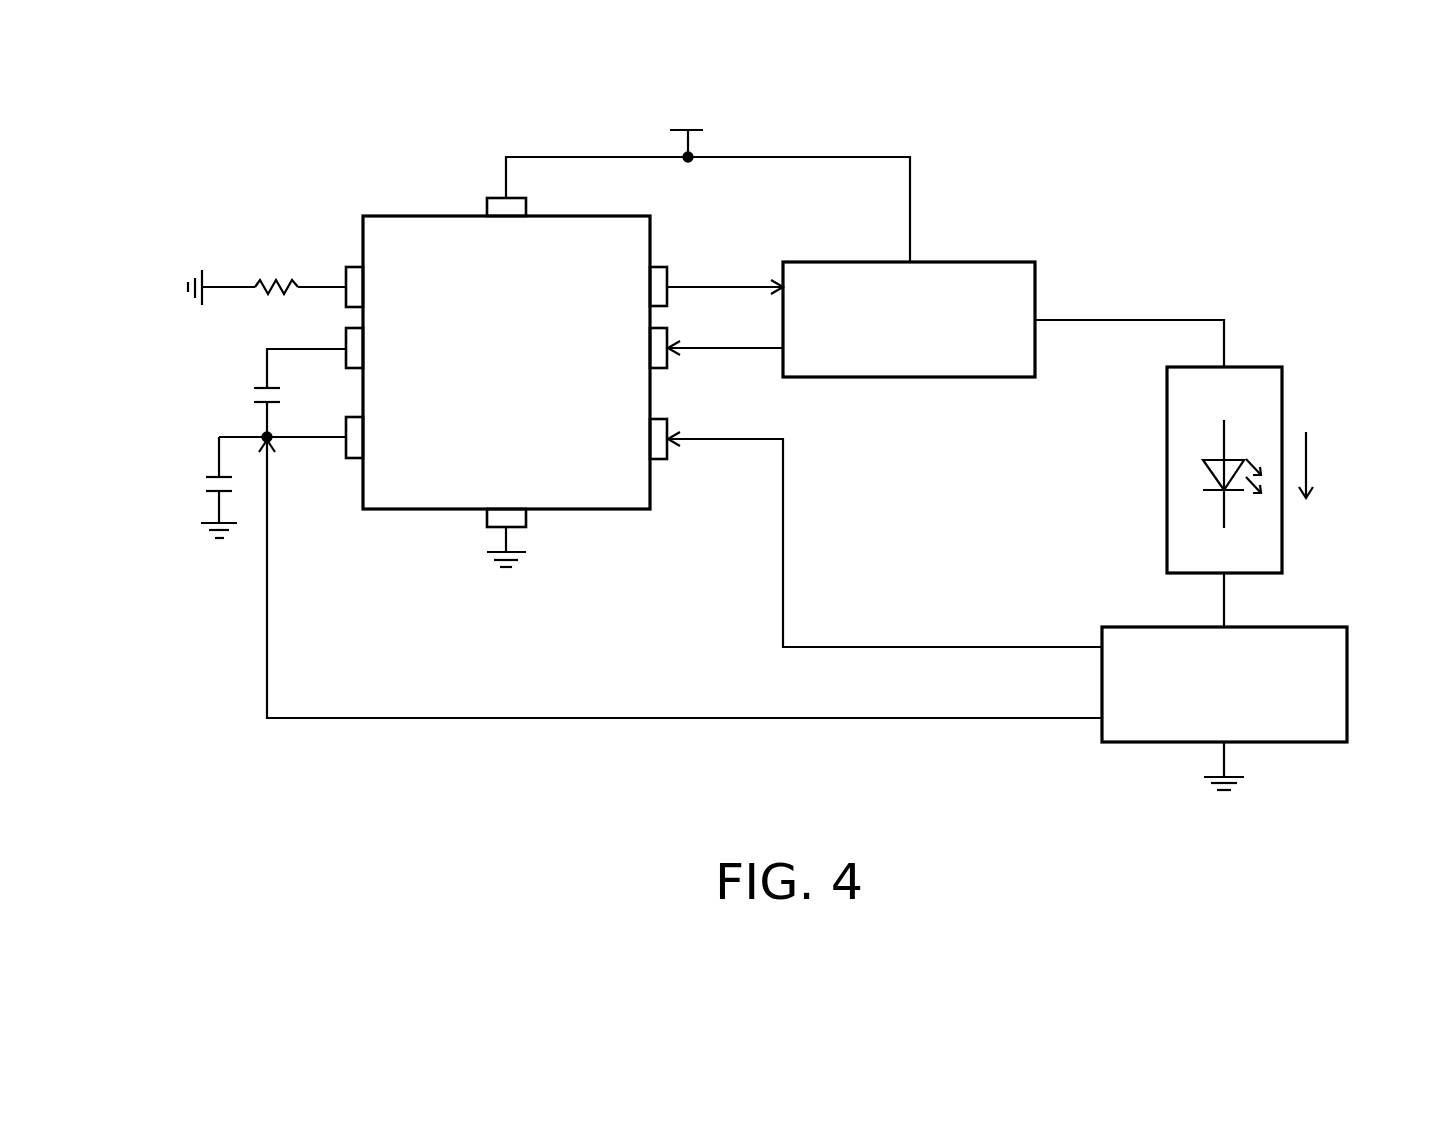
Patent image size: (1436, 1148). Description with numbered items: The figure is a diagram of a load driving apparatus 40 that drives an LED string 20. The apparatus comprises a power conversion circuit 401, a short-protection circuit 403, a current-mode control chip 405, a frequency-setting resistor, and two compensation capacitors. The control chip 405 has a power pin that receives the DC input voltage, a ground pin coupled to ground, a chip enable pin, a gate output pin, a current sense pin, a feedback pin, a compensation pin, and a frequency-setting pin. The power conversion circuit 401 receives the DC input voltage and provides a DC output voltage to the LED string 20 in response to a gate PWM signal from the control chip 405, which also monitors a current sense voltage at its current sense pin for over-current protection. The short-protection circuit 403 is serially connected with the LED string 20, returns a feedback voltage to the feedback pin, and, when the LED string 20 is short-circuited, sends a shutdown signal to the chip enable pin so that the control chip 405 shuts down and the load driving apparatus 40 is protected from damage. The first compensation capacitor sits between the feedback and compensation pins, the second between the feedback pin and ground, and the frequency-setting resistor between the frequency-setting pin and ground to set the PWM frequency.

The load driving apparatus 40 is at (1418, 856).
The control chip 405 is at (592, 214).
The power conversion circuit 401 is at (975, 262).
The LED string 20 is at (1282, 390).
The short-protection circuit 403 is at (1347, 650).